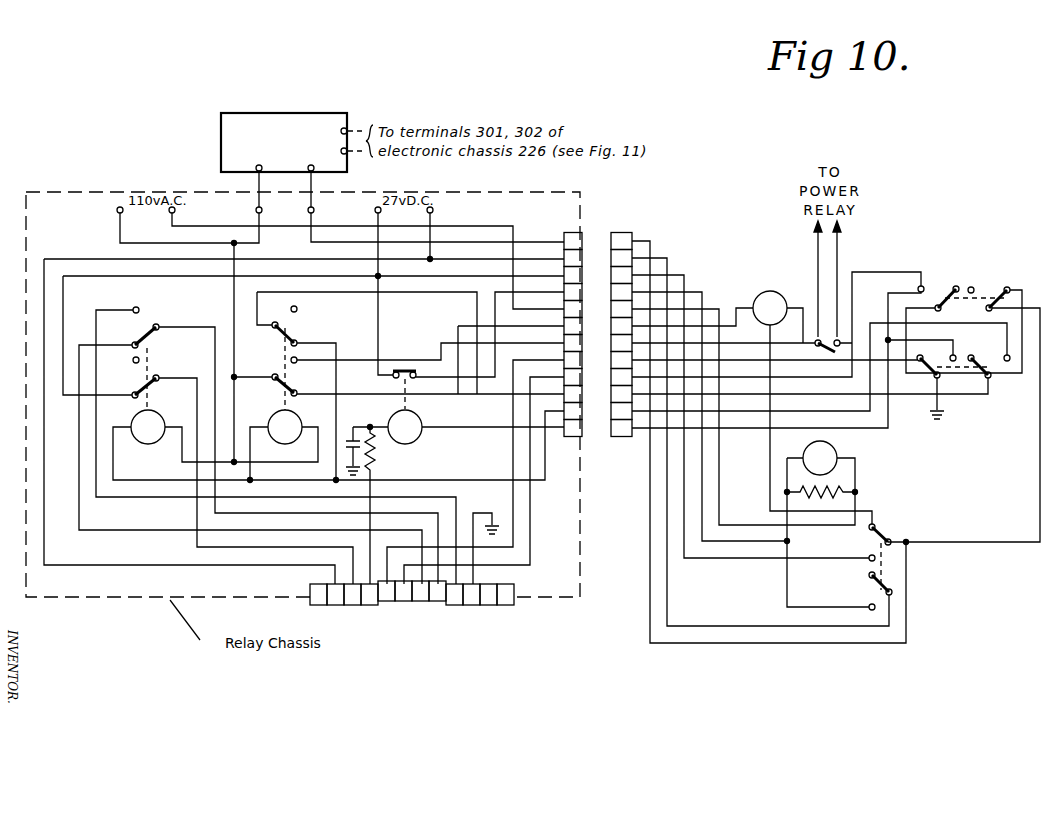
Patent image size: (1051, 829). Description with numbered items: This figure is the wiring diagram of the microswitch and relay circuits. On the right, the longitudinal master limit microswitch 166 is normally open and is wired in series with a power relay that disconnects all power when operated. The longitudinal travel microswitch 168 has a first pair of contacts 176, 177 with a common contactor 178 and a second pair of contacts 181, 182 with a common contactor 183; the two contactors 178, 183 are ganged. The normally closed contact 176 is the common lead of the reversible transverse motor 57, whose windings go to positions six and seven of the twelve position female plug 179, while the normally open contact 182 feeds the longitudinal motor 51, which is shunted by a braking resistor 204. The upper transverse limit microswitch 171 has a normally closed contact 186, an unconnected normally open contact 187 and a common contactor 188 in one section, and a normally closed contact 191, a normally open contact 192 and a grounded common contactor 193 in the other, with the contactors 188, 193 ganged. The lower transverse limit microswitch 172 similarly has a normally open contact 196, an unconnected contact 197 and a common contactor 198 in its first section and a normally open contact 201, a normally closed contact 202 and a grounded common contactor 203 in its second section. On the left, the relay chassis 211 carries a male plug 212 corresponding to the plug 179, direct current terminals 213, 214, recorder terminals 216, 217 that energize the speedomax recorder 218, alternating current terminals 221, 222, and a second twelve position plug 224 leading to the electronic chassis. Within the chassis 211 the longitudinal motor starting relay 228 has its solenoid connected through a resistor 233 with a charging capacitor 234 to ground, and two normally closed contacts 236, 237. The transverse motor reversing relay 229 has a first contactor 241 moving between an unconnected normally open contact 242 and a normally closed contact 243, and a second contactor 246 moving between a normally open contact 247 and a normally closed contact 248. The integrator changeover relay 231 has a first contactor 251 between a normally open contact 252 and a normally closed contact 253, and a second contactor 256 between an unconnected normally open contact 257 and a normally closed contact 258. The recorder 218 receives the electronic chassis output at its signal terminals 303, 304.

The speedomax recorder 218 is at (262, 113).
The signal terminal 303 is at (348, 128).
The signal terminal 304 is at (348, 155).
The relay chassis 211 is at (78, 192).
The alternating current terminal 222 is at (118, 211).
The alternating current terminal 221 is at (175, 211).
The terminal 217 is at (257, 209).
The terminal 216 is at (313, 209).
The negative direct current terminal 214 is at (376, 210).
The positive direct current terminal 213 is at (433, 210).
The normally open contact 252 is at (138, 307).
The first contactor 251 is at (158, 324).
The normally closed contact 253 is at (138, 345).
The normally open contact 257 is at (136, 363).
The second contactor 256 is at (158, 375).
The normally closed contact 258 is at (138, 395).
The integrator changeover relay 231 is at (148, 444).
The transverse motor reversing relay 229 is at (288, 444).
The normally open contact 242 is at (297, 309).
The first contactor 241 is at (274, 327).
The normally closed contact 243 is at (297, 343).
The second contactor 246 is at (274, 375).
The normally open contact 247 is at (295, 363).
The normally closed contact 248 is at (292, 394).
The normally closed contact 237 is at (393, 376).
The normally closed contact 236 is at (414, 378).
The charging capacitor 234 is at (346, 430).
The longitudinal motor starting relay 228 is at (418, 420).
The resistor 233 is at (377, 452).
The male plug 212 is at (585, 440).
The second twelve position plug 224 is at (480, 607).
The twelve position female plug 179 is at (618, 232).
The reversible transverse motor 57 is at (757, 296).
The longitudinal master limit microswitch 166 is at (818, 346).
The longitudinal motor 51 is at (833, 444).
The braking resistor 204 is at (835, 490).
The normally closed contact 176 is at (874, 525).
The common contactor 178 is at (890, 540).
The normally open contact 177 is at (870, 556).
The normally closed contact 181 is at (870, 575).
The normally open contact 182 is at (870, 607).
The common contactor 183 is at (891, 592).
The longitudinal travel microswitch 168 is at (898, 573).
The upper transverse limit microswitch 171 is at (973, 272).
The normally open contact 192 is at (919, 289).
The normally closed contact 191 is at (957, 285).
The normally open contact 187 is at (972, 286).
The normally closed contact 186 is at (1008, 287).
The common contactor 193 is at (935, 308).
The common contactor 188 is at (989, 311).
The lower transverse limit microswitch 172 is at (957, 395).
The normally closed contact 202 is at (920, 355).
The normally open contact 201 is at (954, 355).
The normally open contact 196 is at (1007, 355).
The common contactor 203 is at (935, 377).
The normally closed contact 197 is at (970, 362).
The common contactor 198 is at (990, 378).